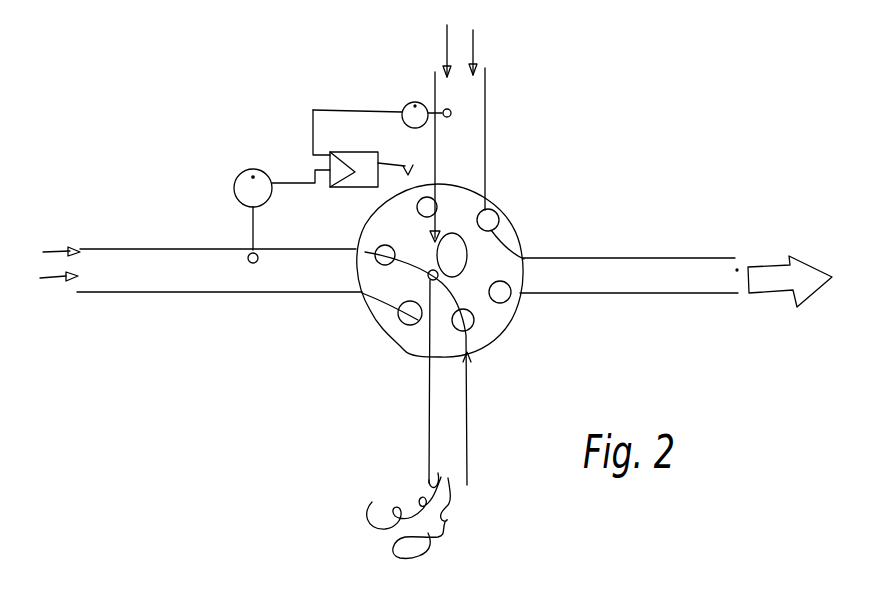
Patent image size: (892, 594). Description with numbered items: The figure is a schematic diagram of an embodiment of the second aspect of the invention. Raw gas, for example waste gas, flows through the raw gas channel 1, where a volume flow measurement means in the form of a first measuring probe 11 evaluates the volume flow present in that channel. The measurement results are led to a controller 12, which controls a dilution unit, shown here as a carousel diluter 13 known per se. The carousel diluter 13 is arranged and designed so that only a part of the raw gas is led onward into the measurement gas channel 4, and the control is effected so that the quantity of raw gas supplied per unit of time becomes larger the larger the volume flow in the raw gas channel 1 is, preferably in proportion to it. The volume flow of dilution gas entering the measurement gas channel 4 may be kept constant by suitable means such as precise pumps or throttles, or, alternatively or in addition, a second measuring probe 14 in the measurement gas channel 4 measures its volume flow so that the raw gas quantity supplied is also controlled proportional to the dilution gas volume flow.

The raw gas channel 1 is at (164, 280).
The measurement gas channel 4 is at (622, 270).
The first measuring probe 11 is at (240, 203).
The controller 12 is at (355, 187).
The carousel diluter 13 is at (497, 320).
The second measuring probe 14 is at (407, 97).